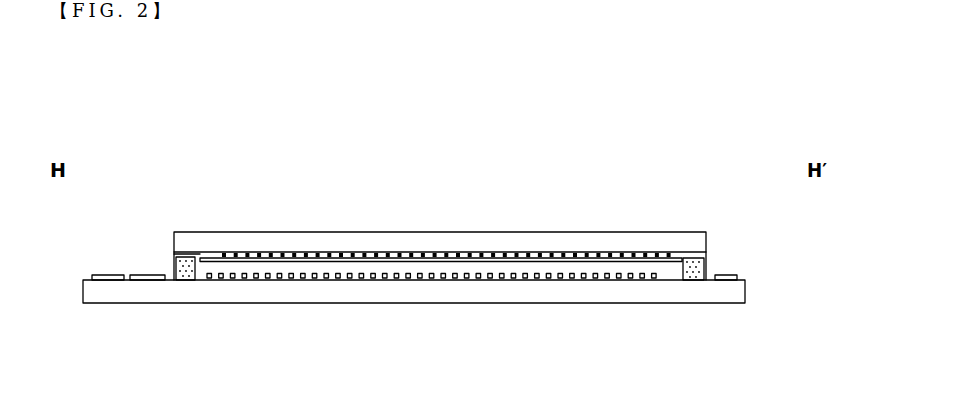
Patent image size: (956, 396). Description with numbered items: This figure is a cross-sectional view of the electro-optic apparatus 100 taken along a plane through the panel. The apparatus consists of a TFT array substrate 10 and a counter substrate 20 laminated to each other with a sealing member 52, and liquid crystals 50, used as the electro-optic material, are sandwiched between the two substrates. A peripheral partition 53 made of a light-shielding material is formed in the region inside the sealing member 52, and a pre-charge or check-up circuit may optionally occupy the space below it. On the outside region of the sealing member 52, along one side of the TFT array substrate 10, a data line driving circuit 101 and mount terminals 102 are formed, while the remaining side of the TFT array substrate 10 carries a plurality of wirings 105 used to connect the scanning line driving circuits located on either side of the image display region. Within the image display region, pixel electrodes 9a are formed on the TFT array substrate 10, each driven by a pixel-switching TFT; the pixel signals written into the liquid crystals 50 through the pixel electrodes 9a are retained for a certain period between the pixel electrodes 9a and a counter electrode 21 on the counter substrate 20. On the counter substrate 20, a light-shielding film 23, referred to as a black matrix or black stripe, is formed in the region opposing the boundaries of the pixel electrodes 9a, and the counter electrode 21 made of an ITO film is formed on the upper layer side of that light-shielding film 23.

The electro-optic apparatus 100 is at (648, 145).
The TFT array substrate 10 is at (690, 287).
The counter substrate 20 is at (665, 242).
The counter electrode 21 is at (378, 258).
The light-shielding film 23 is at (487, 253).
The liquid crystals 50 is at (482, 270).
The sealing member 52 is at (197, 272).
The peripheral partition 53 is at (210, 253).
The pixel electrode 9a is at (352, 280).
The data line driving circuit 101 is at (150, 275).
The mount terminals 102 is at (112, 275).
The wirings 105 is at (722, 275).